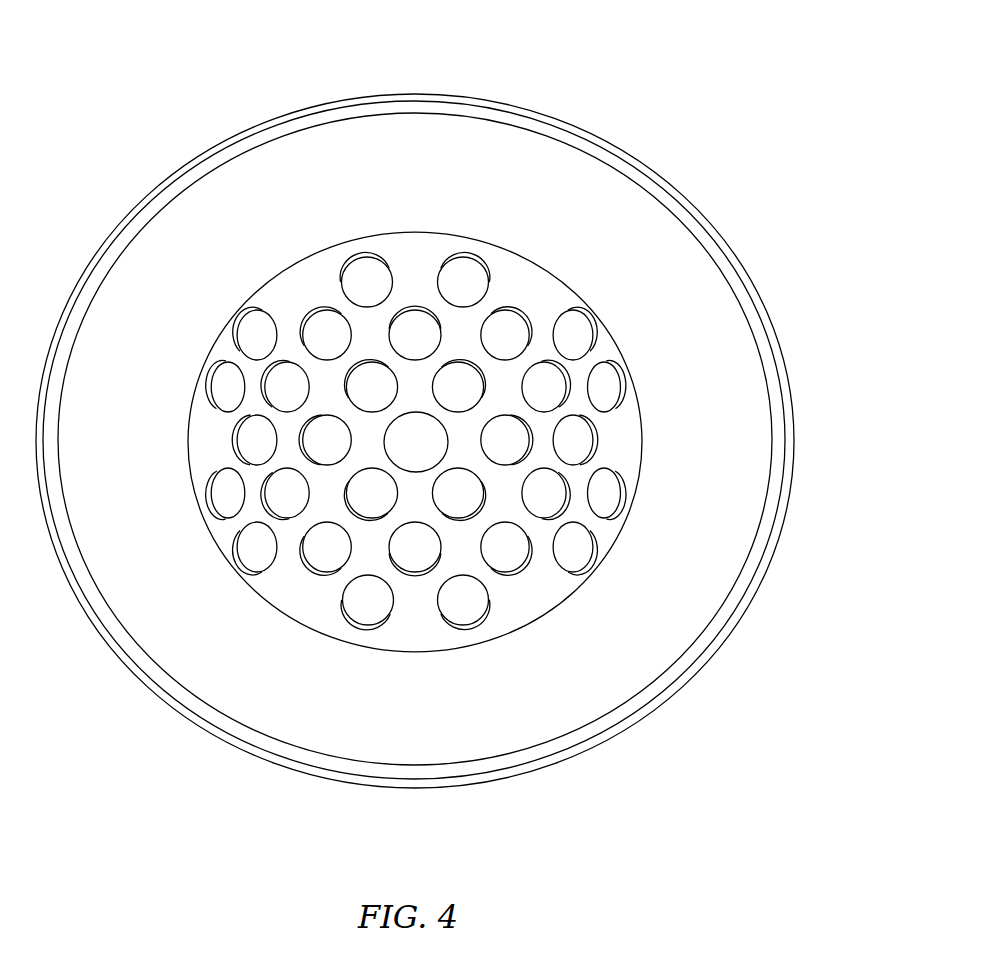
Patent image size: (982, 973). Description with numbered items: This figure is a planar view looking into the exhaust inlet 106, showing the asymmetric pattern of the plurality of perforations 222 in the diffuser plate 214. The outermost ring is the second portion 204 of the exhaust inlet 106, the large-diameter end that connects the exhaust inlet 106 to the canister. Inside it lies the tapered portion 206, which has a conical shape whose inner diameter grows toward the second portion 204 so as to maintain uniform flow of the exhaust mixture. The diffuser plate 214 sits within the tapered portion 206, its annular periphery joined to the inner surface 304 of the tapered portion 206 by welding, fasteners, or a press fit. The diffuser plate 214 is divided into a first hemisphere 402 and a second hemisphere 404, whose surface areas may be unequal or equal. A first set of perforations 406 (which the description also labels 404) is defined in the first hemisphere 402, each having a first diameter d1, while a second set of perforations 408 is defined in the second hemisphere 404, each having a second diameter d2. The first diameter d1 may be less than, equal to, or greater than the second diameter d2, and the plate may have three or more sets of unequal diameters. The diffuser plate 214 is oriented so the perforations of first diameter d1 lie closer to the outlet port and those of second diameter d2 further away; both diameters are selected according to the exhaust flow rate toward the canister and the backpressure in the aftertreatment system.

The exhaust inlet 106 is at (746, 53).
The second portion 204 is at (795, 430).
The tapered portion 206 is at (415, 148).
The diffuser plate 214 is at (285, 270).
The plurality of perforations 222 is at (473, 277).
The inner surface 304 is at (610, 703).
The first hemisphere 402 is at (523, 433).
The second hemisphere 404 is at (617, 543).
The outer hole 406 is at (350, 262).
The second set of perforations 408 is at (378, 627).
The first diameter d1 is at (605, 387).
The second diameter d2 is at (605, 492).